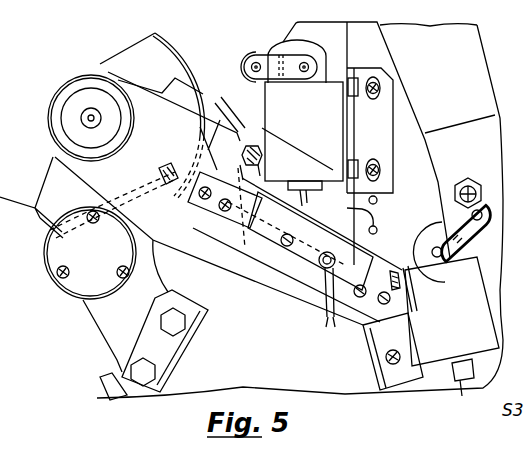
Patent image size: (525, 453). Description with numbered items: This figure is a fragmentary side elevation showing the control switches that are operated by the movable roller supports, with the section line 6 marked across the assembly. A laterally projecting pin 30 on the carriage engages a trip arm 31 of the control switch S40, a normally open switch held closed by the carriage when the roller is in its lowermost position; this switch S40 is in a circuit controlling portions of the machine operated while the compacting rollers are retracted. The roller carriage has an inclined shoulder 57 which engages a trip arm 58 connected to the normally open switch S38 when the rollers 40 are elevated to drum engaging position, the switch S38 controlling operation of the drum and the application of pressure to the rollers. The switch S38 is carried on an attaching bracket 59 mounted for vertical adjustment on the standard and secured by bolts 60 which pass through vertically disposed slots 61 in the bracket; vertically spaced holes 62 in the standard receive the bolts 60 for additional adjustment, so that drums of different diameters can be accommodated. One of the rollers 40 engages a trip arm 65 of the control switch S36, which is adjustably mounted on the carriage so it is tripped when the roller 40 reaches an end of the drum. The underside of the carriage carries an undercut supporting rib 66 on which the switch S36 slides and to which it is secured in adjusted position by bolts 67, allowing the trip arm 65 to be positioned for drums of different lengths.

The section line 6- 6 is at (72, 46).
The laterally projecting pin 30 is at (467, 183).
The trip arm 31 is at (503, 250).
The roller 40 is at (52, 222).
The inclined shoulder 57 is at (250, 133).
The trip arm 58 is at (268, 53).
The attaching bracket 59 is at (352, 78).
The bolts 60 is at (380, 86).
The vertically disposed slots 61 is at (378, 158).
The vertically spaced holes 62 is at (350, 229).
The trip arm 65 is at (157, 172).
The undercut supporting rib 66 is at (217, 234).
The bolts 67 is at (261, 154).
The control switch S36 is at (310, 275).
The control switch S38 is at (310, 122).
The control switch S40 is at (443, 348).